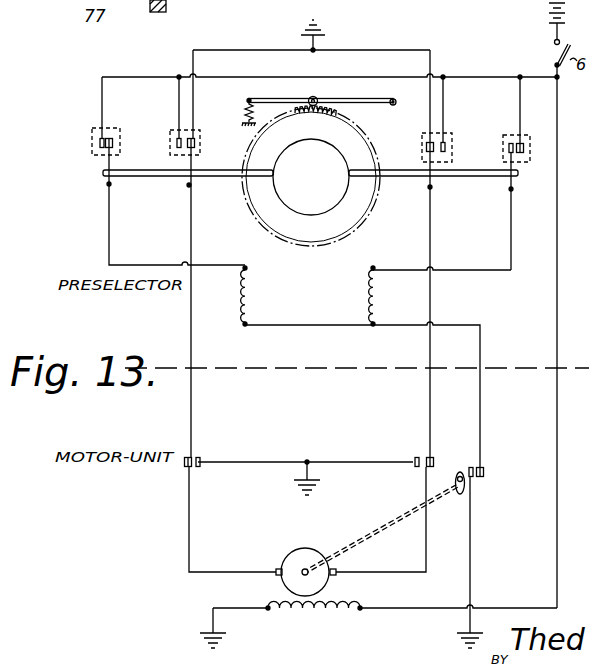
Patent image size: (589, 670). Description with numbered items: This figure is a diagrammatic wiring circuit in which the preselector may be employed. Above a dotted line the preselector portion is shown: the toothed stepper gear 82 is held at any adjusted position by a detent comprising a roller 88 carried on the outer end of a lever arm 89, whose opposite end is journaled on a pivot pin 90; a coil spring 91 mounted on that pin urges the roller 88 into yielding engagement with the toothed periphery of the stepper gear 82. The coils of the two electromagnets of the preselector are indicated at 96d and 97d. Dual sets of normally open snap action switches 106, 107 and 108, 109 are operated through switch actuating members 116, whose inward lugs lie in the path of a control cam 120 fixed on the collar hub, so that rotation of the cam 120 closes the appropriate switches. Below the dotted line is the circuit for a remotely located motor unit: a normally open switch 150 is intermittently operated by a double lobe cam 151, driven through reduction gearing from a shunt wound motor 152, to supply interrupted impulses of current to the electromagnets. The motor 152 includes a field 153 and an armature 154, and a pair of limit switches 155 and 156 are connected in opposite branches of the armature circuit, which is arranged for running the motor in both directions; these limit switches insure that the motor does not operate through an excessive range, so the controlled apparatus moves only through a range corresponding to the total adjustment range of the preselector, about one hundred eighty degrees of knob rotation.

The stepper gear 82 is at (252, 206).
The roller 88 is at (316, 100).
The lever arm 89 is at (270, 97).
The pivot pin 90 is at (396, 102).
The coil spring 91 is at (246, 108).
The coil of electromagnet 96d is at (250, 292).
The coil of electromagnet 97d is at (367, 296).
The snap action switch 106 is at (508, 142).
The snap action switch 107 is at (450, 134).
The snap action switch 108 is at (96, 154).
The snap action switch 109 is at (170, 135).
The switch actuating member 116 is at (213, 170).
The control cam 120 is at (335, 195).
The normally open switch 150 is at (482, 472).
The double lobe cam 151 is at (460, 495).
The shunt wound motor 152 is at (334, 591).
The field 153 is at (318, 612).
The armature 154 is at (295, 559).
The limit switch 155 is at (193, 455).
The limit switch 156 is at (426, 454).